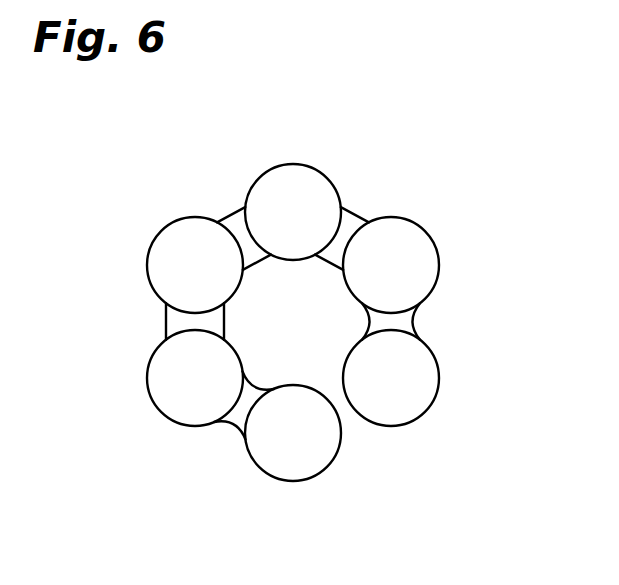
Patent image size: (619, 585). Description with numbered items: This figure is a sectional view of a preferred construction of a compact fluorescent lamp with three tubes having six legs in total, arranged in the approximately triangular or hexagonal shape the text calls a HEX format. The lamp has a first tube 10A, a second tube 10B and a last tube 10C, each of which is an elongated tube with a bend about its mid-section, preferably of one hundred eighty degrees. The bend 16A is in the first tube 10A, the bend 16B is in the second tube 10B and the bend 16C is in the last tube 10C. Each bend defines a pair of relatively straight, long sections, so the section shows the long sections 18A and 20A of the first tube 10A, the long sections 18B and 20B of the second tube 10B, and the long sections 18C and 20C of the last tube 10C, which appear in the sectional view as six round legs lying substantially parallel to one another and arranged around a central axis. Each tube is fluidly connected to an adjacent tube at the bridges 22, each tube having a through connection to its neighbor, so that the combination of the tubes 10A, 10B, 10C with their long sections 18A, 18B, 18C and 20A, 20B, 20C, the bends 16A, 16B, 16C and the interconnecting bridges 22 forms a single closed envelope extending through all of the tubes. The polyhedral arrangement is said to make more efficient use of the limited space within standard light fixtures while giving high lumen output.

The first tube 10A is at (463, 285).
The second tube 10B is at (212, 185).
The last tube 10C is at (190, 445).
The bend 16A is at (412, 318).
The bend 16B is at (242, 210).
The bend 16C is at (252, 462).
The long section 18A is at (433, 397).
The long section 18B is at (295, 163).
The long section 18C is at (153, 407).
The long section 20A is at (428, 235).
The long section 20B is at (148, 247).
The long section 20C is at (303, 480).
The bridges 22 is at (163, 327).